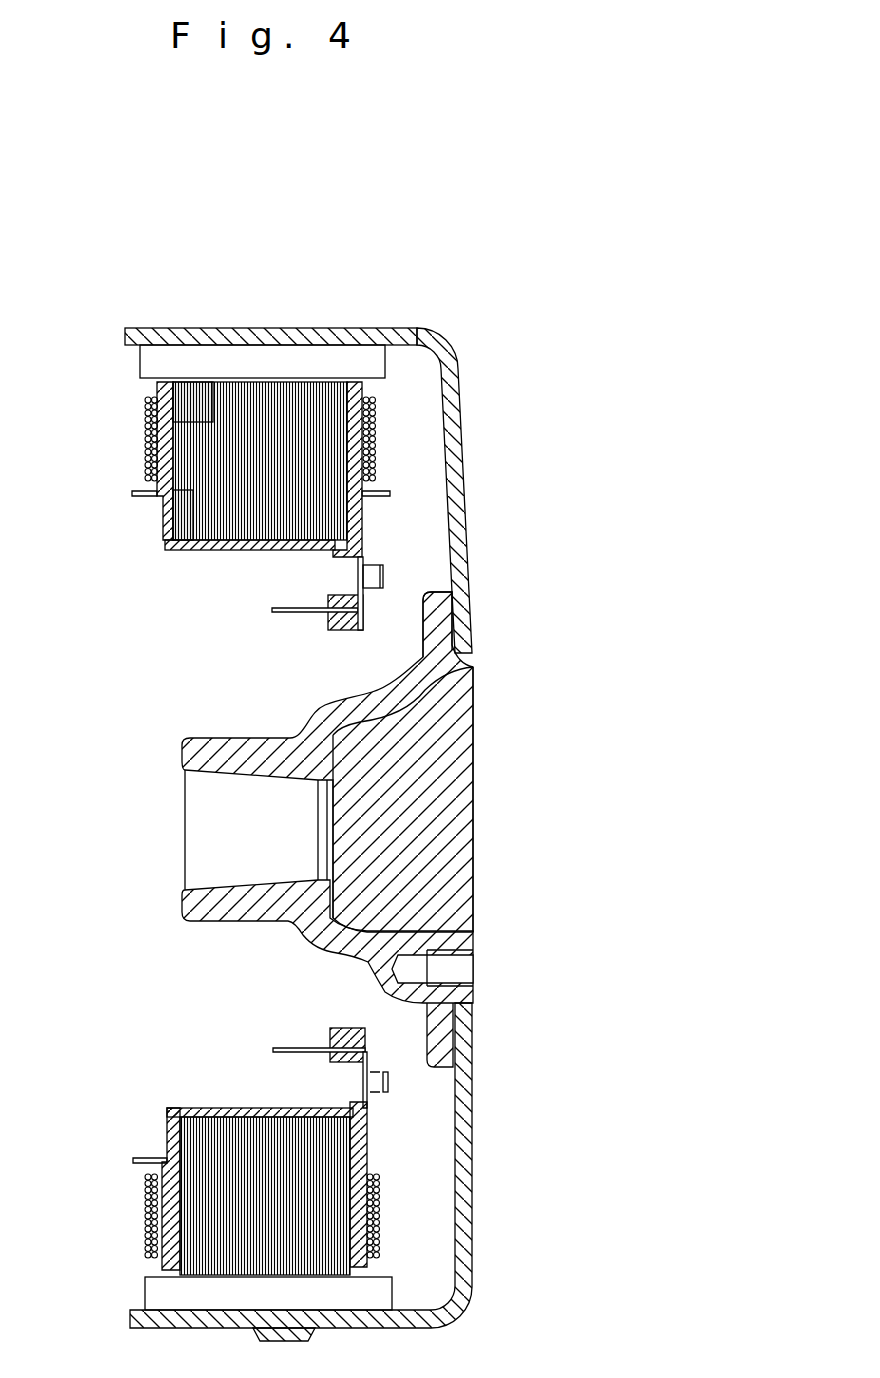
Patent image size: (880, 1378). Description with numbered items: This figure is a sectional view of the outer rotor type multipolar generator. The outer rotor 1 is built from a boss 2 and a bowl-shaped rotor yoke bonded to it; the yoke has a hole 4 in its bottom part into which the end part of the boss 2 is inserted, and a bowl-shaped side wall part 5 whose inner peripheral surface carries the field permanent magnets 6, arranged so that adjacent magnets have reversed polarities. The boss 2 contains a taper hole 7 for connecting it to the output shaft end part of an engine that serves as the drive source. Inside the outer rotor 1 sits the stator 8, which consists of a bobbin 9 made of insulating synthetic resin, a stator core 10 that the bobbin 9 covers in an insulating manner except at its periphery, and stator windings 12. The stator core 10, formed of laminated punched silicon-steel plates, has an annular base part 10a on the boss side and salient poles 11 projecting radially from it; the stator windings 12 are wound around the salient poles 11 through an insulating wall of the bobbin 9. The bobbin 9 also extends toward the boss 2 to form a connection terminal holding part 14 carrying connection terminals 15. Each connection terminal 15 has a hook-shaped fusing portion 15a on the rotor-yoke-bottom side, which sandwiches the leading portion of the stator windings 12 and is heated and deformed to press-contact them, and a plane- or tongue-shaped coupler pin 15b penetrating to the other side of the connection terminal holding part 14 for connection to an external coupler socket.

The outer rotor 1 is at (468, 427).
The boss 2 is at (337, 829).
The hole 4 is at (453, 658).
The bowl-shaped side wall part 5 is at (274, 337).
The field permanent magnet 6 is at (170, 357).
The taper hole 7 is at (238, 884).
The stator 8 is at (229, 820).
The bobbin 9 is at (200, 553).
The stator core 10 is at (308, 506).
The annular base part 10a is at (195, 512).
The salient pole 11 is at (205, 410).
The stator winding 12 is at (152, 437).
The connection terminal holding part 14 is at (343, 632).
The connection terminal 15 is at (313, 857).
The fusing portion 15a is at (380, 583).
The coupler pin 15b is at (296, 615).